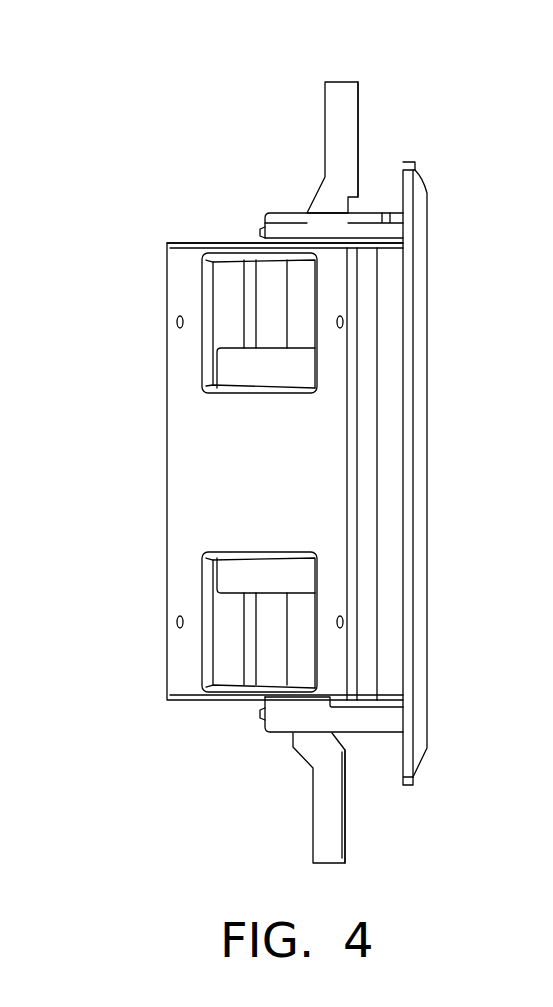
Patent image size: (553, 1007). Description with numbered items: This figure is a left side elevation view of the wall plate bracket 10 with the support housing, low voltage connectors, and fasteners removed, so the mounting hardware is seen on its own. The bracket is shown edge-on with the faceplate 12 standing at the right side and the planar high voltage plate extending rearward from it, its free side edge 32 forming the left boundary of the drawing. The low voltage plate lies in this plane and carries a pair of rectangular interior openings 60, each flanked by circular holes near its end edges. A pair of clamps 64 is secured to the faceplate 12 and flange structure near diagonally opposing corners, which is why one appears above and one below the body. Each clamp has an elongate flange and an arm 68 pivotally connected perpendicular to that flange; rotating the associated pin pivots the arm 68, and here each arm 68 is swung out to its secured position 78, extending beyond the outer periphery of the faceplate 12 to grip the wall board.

The wall plate bracket 10 is at (197, 240).
The faceplate 12 is at (430, 478).
The side edge 32 is at (162, 502).
The interior openings 60 is at (232, 267).
The clamps 64 is at (295, 208).
The arm 68 is at (358, 127).
The secured position 78 is at (323, 137).